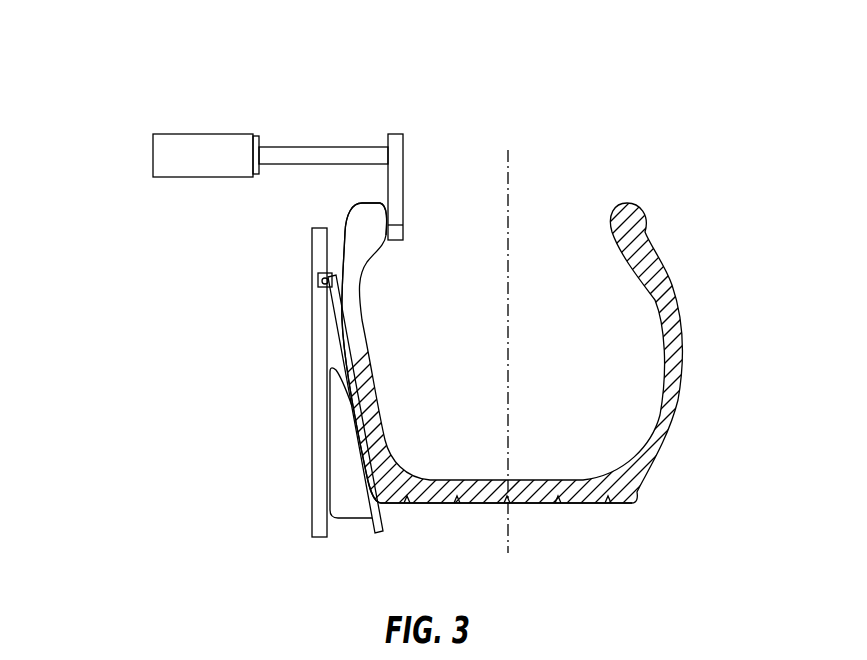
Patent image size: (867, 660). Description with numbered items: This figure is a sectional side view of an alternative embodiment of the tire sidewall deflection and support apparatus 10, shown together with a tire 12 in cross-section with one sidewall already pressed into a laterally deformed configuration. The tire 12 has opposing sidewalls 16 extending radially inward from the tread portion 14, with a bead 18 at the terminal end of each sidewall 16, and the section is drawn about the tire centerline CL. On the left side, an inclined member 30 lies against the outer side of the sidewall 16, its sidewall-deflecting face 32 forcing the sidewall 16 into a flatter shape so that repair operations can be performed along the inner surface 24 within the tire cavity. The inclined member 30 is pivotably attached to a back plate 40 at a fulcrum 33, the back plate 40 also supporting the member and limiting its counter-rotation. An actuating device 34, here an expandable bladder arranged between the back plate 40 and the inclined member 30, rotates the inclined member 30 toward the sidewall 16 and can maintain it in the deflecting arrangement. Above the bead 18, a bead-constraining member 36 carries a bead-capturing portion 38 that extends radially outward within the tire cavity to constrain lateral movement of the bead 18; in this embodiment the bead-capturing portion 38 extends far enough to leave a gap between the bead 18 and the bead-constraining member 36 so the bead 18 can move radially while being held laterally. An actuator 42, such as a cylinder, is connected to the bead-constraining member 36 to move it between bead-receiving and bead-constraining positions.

The tire sidewall deflection and support apparatus 10 is at (130, 48).
The tire 12 is at (635, 520).
The tread portion 14 is at (532, 503).
The sidewall 16 is at (360, 308).
The bead 18 is at (372, 211).
The inner surface of the sidewall 24 is at (385, 415).
The inclined member 30 is at (357, 435).
The sidewall-deflecting face 32 is at (382, 518).
The fulcrum 33 is at (318, 282).
The actuating device 34 is at (352, 518).
The bead-constraining member 36 is at (404, 152).
The bead-capturing portion 38 is at (404, 222).
The back plate 40 is at (312, 347).
The actuator 42 is at (215, 178).
The centerline CL is at (508, 180).